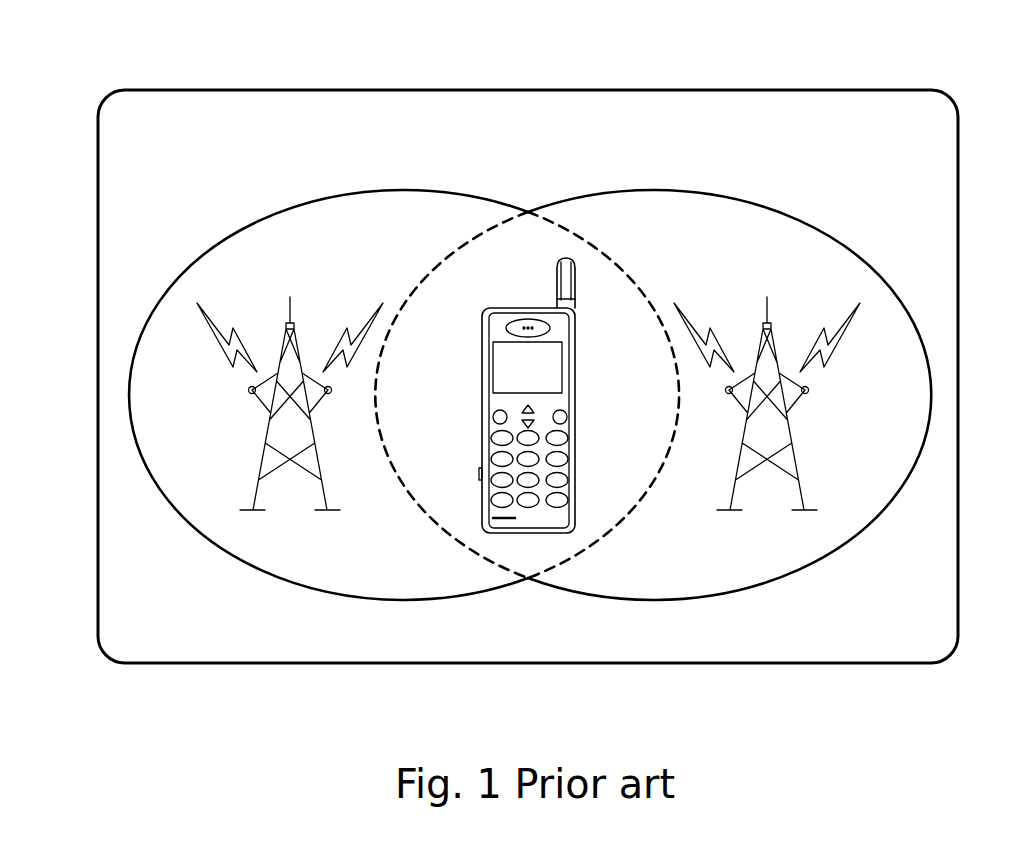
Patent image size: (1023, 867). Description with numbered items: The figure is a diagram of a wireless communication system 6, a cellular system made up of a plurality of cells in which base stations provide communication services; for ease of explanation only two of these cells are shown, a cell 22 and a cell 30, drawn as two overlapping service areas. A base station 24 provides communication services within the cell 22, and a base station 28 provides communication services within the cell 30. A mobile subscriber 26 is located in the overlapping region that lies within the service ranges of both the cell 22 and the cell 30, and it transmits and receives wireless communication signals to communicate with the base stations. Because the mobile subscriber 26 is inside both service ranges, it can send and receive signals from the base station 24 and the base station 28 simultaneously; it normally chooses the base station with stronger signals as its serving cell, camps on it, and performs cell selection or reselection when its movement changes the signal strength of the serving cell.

The wireless communication system 6 is at (872, 85).
The cell 22 is at (307, 203).
The base station 24 is at (288, 312).
The mobile subscriber 26 is at (482, 338).
The base station 28 is at (769, 311).
The cell 30 is at (771, 210).